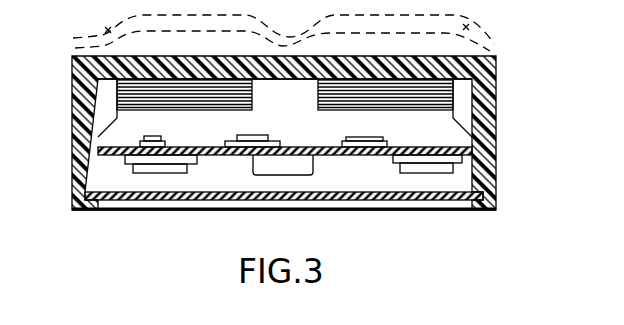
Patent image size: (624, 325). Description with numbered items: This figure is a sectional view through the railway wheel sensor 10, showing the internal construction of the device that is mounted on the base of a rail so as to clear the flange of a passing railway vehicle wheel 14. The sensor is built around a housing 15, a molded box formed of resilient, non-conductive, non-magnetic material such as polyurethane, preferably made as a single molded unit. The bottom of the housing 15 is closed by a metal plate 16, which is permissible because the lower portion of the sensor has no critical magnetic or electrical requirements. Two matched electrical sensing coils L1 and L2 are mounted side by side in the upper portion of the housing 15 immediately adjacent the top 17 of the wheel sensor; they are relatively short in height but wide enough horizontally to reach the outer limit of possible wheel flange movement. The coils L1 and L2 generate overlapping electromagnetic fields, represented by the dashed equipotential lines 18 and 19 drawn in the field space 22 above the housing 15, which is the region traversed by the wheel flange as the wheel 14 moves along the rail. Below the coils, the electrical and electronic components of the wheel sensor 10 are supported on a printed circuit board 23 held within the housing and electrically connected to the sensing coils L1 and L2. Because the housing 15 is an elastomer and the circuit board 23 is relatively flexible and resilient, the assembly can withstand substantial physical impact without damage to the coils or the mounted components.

The railway wheel sensor 10 is at (63, 158).
The railway vehicle wheel 14 is at (0, 248).
The housing 15 is at (497, 128).
The metal plate 16 is at (208, 200).
The top of the wheel sensor 17 is at (378, 55).
The equipotential line 18 is at (106, 29).
The equipotential line 19 is at (469, 27).
The field space 22 is at (283, 32).
The printed circuit board 23 is at (322, 151).
The electrical sensing coil L1 is at (160, 102).
The electrical sensing coil L2 is at (388, 102).